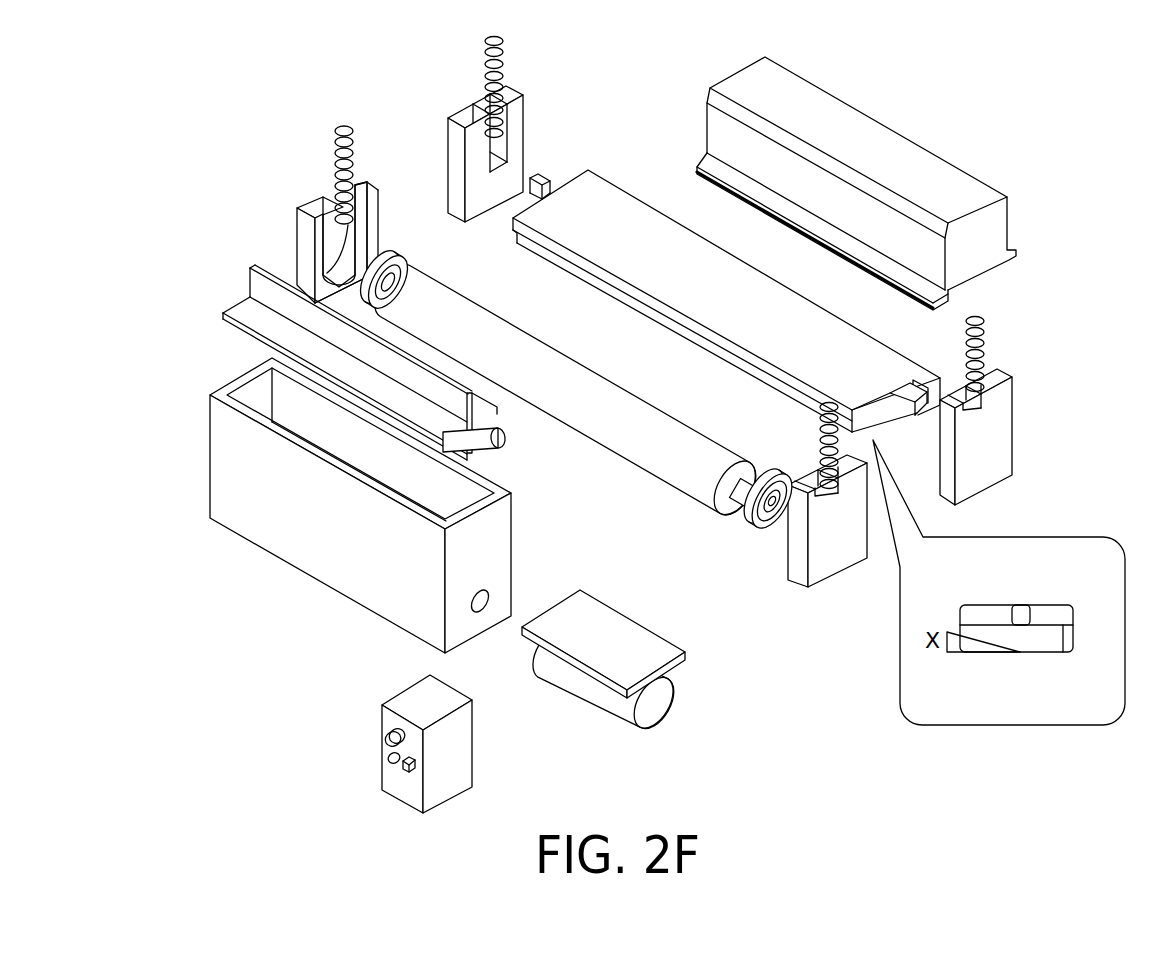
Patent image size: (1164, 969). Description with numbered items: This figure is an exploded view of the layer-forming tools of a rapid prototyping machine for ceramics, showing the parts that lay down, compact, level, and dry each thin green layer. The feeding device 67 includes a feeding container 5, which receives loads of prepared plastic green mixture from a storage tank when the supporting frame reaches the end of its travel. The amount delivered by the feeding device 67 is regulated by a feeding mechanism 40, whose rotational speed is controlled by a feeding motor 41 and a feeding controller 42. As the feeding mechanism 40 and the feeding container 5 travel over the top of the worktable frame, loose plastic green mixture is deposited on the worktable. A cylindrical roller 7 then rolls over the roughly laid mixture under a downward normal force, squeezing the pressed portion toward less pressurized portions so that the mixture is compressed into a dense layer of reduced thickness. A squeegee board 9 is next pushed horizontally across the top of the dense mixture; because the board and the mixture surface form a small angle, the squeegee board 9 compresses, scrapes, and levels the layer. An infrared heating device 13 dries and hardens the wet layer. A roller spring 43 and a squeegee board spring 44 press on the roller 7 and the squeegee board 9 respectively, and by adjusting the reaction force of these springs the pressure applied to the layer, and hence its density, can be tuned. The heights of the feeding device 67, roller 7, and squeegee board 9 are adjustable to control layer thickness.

The feeding container 5 is at (232, 488).
The roller 7 is at (677, 482).
The squeegee board 9 is at (904, 367).
The infrared heating device 13 is at (990, 232).
The feeding mechanism 40 is at (236, 310).
The feeding motor 41 is at (593, 695).
The feeding controller 42 is at (460, 752).
The roller spring 43 is at (337, 141).
The squeegee board spring 44 is at (486, 40).
The feeding device 67 is at (616, 420).